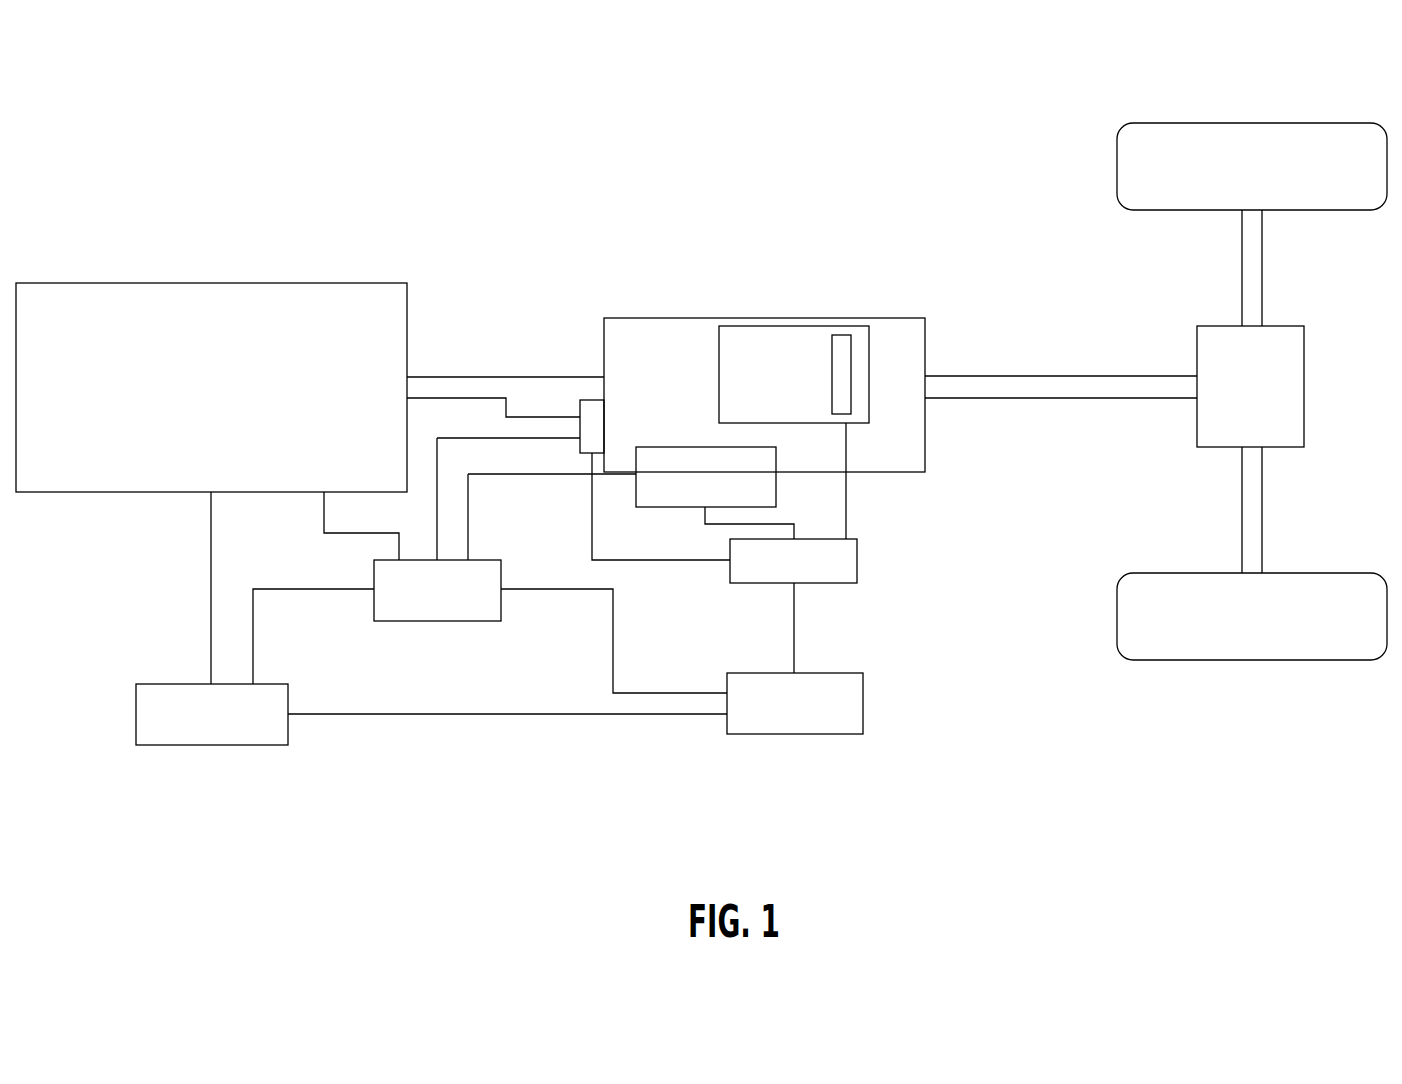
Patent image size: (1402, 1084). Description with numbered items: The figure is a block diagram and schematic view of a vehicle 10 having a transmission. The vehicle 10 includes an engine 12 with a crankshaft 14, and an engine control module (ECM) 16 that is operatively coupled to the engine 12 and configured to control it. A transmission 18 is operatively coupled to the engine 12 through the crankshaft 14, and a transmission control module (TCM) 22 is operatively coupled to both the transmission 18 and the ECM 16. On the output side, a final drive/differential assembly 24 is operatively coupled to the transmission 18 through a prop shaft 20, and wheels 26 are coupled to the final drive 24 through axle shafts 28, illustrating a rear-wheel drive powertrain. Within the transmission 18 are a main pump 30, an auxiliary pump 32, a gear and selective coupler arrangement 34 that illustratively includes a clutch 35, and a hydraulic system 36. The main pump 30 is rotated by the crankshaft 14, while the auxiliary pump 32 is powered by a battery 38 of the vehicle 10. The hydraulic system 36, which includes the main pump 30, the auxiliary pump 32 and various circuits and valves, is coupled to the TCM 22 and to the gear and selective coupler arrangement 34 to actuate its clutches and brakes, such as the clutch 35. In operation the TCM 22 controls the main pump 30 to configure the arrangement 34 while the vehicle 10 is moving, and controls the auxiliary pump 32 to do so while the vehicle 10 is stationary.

The vehicle 10 is at (336, 188).
The engine 12 is at (211, 283).
The crankshaft 14 is at (480, 376).
The engine control module 16 is at (210, 745).
The transmission 18 is at (705, 250).
The prop shaft 20 is at (1042, 376).
The transmission control module 22 is at (794, 734).
The final drive/differential assembly 24 is at (1304, 385).
The wheels 26 is at (1117, 165).
The axle shafts 28 is at (1242, 268).
The main pump 30 is at (594, 400).
The auxiliary pump 32 is at (652, 447).
The gear and selective coupler arrangement 34 is at (750, 326).
The clutch 35 is at (842, 335).
The hydraulic system 36 is at (857, 560).
The battery 38 is at (435, 621).